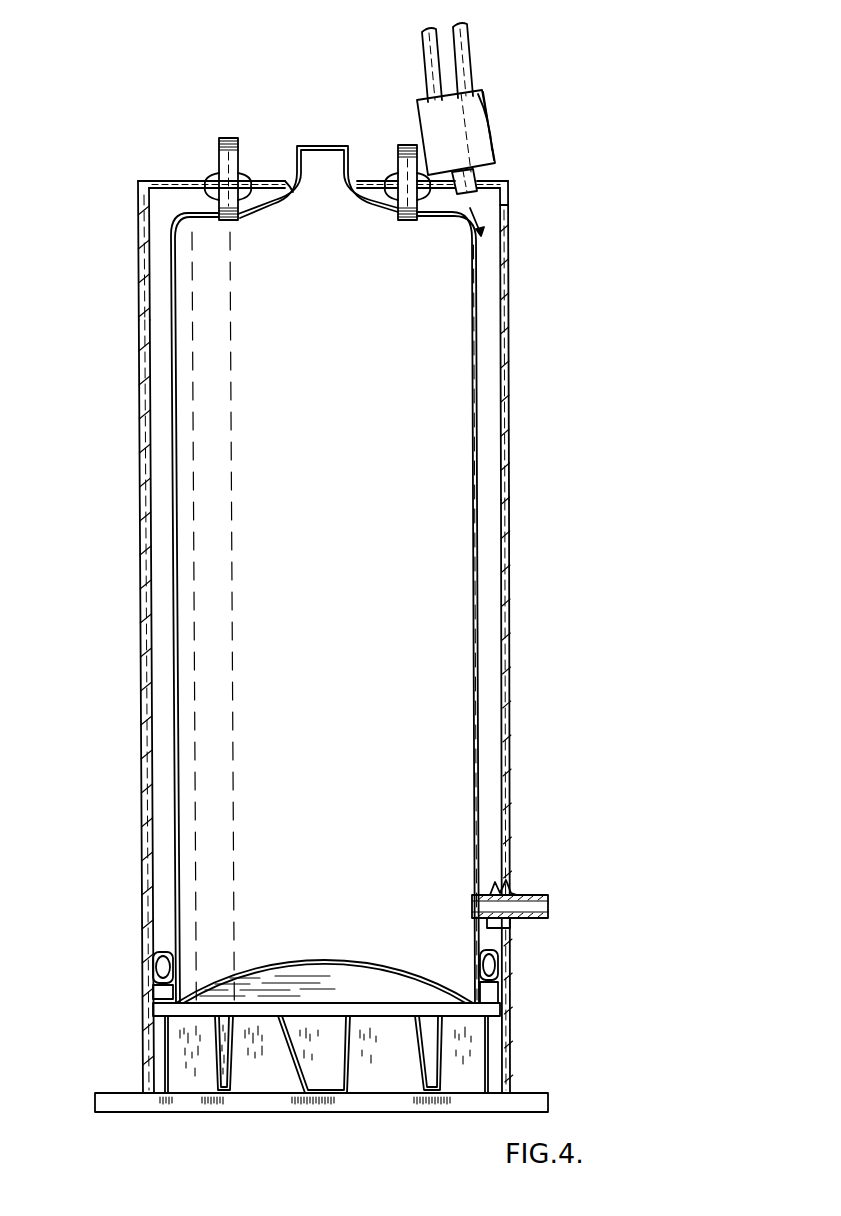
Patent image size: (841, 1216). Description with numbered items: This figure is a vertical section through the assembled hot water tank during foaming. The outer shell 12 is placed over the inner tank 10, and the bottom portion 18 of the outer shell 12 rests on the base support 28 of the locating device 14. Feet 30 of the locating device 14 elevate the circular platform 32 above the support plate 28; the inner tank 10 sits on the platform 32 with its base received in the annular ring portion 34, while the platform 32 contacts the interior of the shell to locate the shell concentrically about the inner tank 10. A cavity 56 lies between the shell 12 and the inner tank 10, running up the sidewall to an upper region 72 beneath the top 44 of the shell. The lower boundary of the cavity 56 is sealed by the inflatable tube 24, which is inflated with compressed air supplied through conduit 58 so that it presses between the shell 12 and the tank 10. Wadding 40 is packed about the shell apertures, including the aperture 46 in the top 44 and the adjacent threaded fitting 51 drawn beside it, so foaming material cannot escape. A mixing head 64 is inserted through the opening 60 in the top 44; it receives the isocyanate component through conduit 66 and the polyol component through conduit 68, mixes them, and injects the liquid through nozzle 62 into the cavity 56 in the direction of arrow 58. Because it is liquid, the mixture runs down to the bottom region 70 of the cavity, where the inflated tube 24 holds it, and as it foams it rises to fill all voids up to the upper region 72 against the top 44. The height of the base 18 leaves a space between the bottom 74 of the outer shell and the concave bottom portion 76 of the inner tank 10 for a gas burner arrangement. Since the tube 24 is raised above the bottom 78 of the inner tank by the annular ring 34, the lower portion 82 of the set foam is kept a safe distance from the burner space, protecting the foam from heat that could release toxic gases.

The inner tank 10 is at (441, 681).
The outer shell 12 is at (522, 565).
The locating device 14 is at (120, 1052).
The bottom portion of the outer shell 18 is at (512, 1056).
The inflatable tube 24 is at (498, 958).
The support plate 28 is at (549, 1103).
The feet 30 is at (233, 1058).
The circular platform 32 is at (262, 1007).
The annular ring portion 34 is at (495, 993).
The wadding 40 is at (511, 886).
The top 44 is at (167, 180).
The aperture 46 is at (214, 174).
The threaded fitting 51 is at (395, 174).
The cavity 56 is at (490, 484).
The conduit 58 is at (493, 218).
The opening 60 is at (496, 135).
The nozzle 62 is at (462, 186).
The mixing head 64 is at (468, 118).
The conduit for the isocyanate component 66 is at (460, 48).
The conduit for the polyol component 68 is at (423, 43).
The bottom region of the cavity 70 is at (165, 913).
The upper region of the cavity 72 is at (157, 217).
The bottom of the outer shell 74 is at (495, 1094).
The concave bottom portion of the inner tank 76 is at (322, 960).
The bottom of the inner tank 78 is at (178, 1003).
The lower portion of the set foam 82 is at (150, 962).